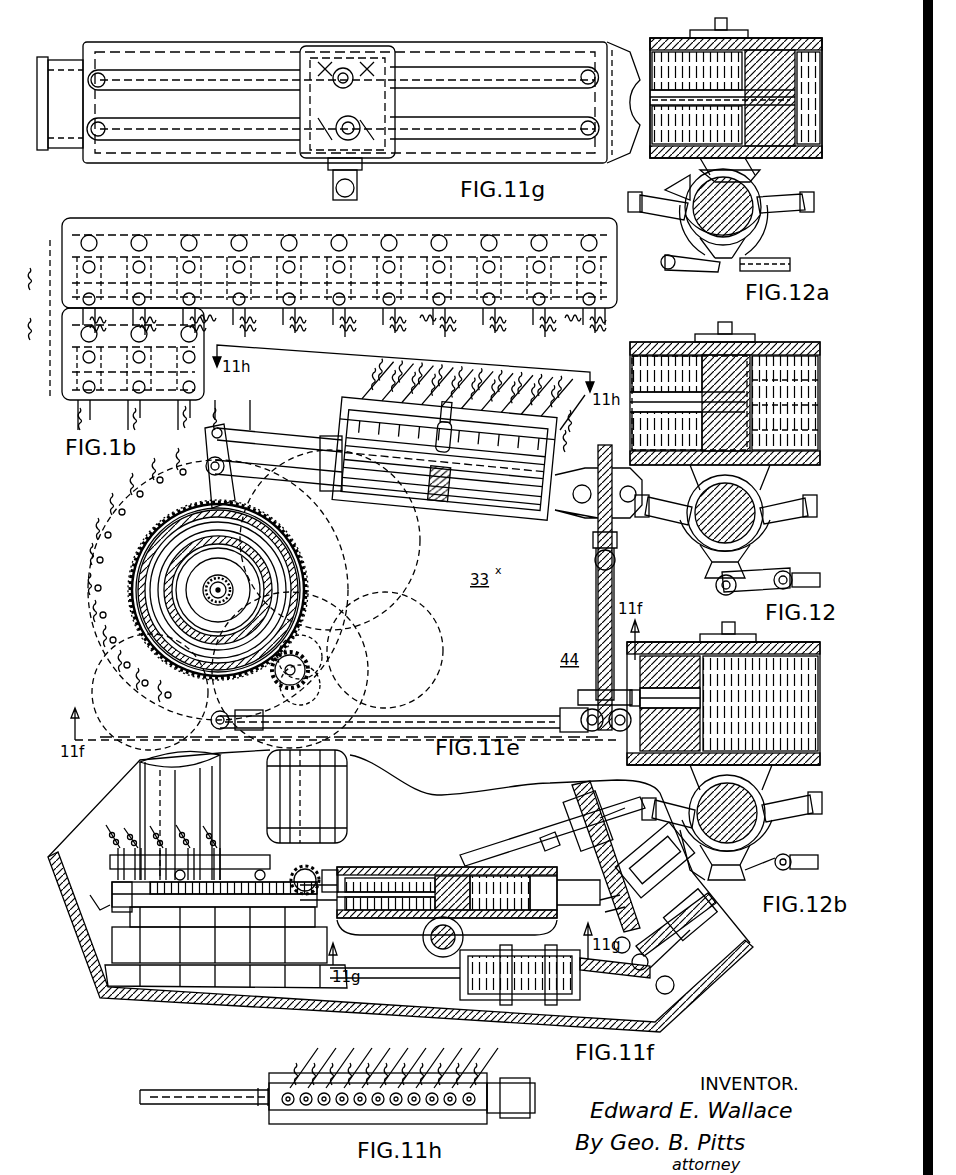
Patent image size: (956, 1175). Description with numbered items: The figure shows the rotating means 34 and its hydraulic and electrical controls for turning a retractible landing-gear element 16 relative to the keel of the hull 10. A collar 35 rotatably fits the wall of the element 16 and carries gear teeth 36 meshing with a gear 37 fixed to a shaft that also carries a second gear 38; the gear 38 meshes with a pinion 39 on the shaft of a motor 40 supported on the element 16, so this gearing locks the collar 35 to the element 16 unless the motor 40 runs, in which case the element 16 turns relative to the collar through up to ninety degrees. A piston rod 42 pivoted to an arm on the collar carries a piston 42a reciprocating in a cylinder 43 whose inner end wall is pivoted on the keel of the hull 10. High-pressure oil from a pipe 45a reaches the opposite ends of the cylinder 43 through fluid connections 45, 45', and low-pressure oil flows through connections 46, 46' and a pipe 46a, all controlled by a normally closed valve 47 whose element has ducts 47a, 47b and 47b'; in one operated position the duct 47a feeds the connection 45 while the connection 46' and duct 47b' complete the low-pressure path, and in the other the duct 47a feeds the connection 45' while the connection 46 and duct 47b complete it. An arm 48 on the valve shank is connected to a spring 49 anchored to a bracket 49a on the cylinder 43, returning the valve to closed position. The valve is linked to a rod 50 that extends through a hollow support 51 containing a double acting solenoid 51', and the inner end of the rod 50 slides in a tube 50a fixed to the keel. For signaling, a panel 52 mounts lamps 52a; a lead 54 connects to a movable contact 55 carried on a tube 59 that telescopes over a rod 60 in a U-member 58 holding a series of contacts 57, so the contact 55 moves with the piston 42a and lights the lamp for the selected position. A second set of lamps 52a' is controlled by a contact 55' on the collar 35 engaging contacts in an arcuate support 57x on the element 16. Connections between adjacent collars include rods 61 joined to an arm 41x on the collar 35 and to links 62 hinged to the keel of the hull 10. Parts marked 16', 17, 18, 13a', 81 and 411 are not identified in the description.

In FIG. 11F, the hull 10 is at (735, 972).
In FIG. 11E, the element 16 is at (187, 590).
In FIG. 11F, the element 16 is at (160, 815).
In FIG. 11F, the base strip 16' is at (226, 998).
In FIG. 11E, the wheel ring 17 is at (230, 588).
In FIG. 11E, the hub 18 is at (204, 576).
In FIG. 11E, the shaft 13a' is at (235, 604).
In FIG. 11E, the bearing 81 is at (221, 580).
In FIG. 11F, the rotatable means 34 is at (399, 846).
In FIG. 11F, the collar 35 is at (185, 907).
In FIG. 11E, the gear teeth 36 is at (305, 600).
In FIG. 11F, the gear teeth 36 is at (172, 907).
In FIG. 11E, the gear 37 is at (320, 650).
In FIG. 11E, the second gear 38 is at (312, 665).
In FIG. 11E, the pinion 39 is at (320, 688).
In FIG. 11F, the pinion 39 is at (318, 876).
In FIG. 11F, the motor 40 is at (350, 815).
In FIG. 11E, the arm 411 is at (262, 482).
In FIG. 11E, the arm 41x is at (350, 749).
In FIG. 11E, the piston rod 42 is at (270, 428).
In FIG. 11F, the piston rod 42 is at (398, 878).
In FIG. 11E, the piston 42a is at (443, 510).
In FIG. 12B, the piston 42a is at (668, 660).
In FIG. 11F, the piston 42a is at (425, 940).
In FIG. 12A, the cylinder 43 is at (770, 48).
In FIG. 11E, the cylinder 43 is at (441, 496).
In FIG. 12, the cylinder 43 is at (668, 348).
In FIG. 11F, the cylinder 43 is at (500, 867).
In FIG. 11G, the fluid connection 45 is at (341, 89).
In FIG. 12, the fluid connection 45 is at (660, 539).
In FIG. 11G, the fluid connection 45' is at (494, 86).
In FIG. 12A, the fluid connection 45' is at (651, 194).
In FIG. 12, the fluid connection 45' is at (800, 531).
In FIG. 12B, the fluid connection 45' is at (792, 800).
In FIG. 12, the pipe 45a is at (712, 575).
In FIG. 11G, the fluid connection 46 is at (341, 118).
In FIG. 12, the fluid connection 46 is at (663, 501).
In FIG. 12B, the fluid connection 46 is at (668, 803).
In FIG. 11G, the fluid connection 46' is at (494, 114).
In FIG. 12, the fluid connection 46' is at (794, 500).
In FIG. 12B, the pipe 46a is at (755, 872).
In FIG. 12A, the valve 47 is at (724, 212).
In FIG. 12, the valve 47 is at (765, 545).
In FIG. 12B, the valve 47 is at (727, 808).
In FIG. 12A, the duct 47a is at (690, 225).
In FIG. 12B, the duct 47a is at (760, 830).
In FIG. 12B, the duct 47b is at (713, 872).
In FIG. 12A, the duct 47b' is at (733, 200).
In FIG. 12B, the duct 47b' is at (783, 773).
In FIG. 12A, the arm 48 is at (772, 175).
In FIG. 12B, the arm 48 is at (762, 842).
In FIG. 12, the spring 49 is at (760, 345).
In FIG. 12B, the spring 49 is at (700, 650).
In FIG. 12B, the bracket 49a is at (745, 640).
In FIG. 12A, the rod 50 is at (783, 258).
In FIG. 12, the rod 50 is at (800, 573).
In FIG. 11F, the rod 50 is at (470, 972).
In FIG. 11F, the tube 50a is at (640, 972).
In FIG. 11F, the hollow support 51 is at (577, 913).
In FIG. 11F, the double acting solenoid 51' is at (615, 981).
In FIG. 11B, the panel 52 is at (62, 243).
In FIG. 11B, the signal device 52a is at (309, 294).
In FIG. 11B, the signal device 52a' is at (339, 293).
In FIG. 11E, the lead 54 is at (578, 422).
In FIG. 11E, the movable contact 55 is at (466, 431).
In FIG. 11F, the contact 55' is at (103, 891).
In FIG. 11E, the contact 57 is at (453, 386).
In FIG. 11H, the contact 57 is at (330, 1060).
In FIG. 11E, the arcuate support 57x is at (122, 636).
In FIG. 11F, the arcuate support 57x is at (110, 860).
In FIG. 11E, the U-member 58 is at (432, 450).
In FIG. 11H, the U-member 58 is at (310, 1117).
In FIG. 11E, the tube 59 is at (292, 436).
In FIG. 11H, the tube 59 is at (210, 1105).
In FIG. 11E, the rod 60 is at (520, 458).
In FIG. 11E, the rod 61 is at (421, 708).
In FIG. 11F, the rod 61 is at (470, 852).
In FIG. 11E, the link 62 is at (595, 608).
In FIG. 11F, the link 62 is at (601, 856).